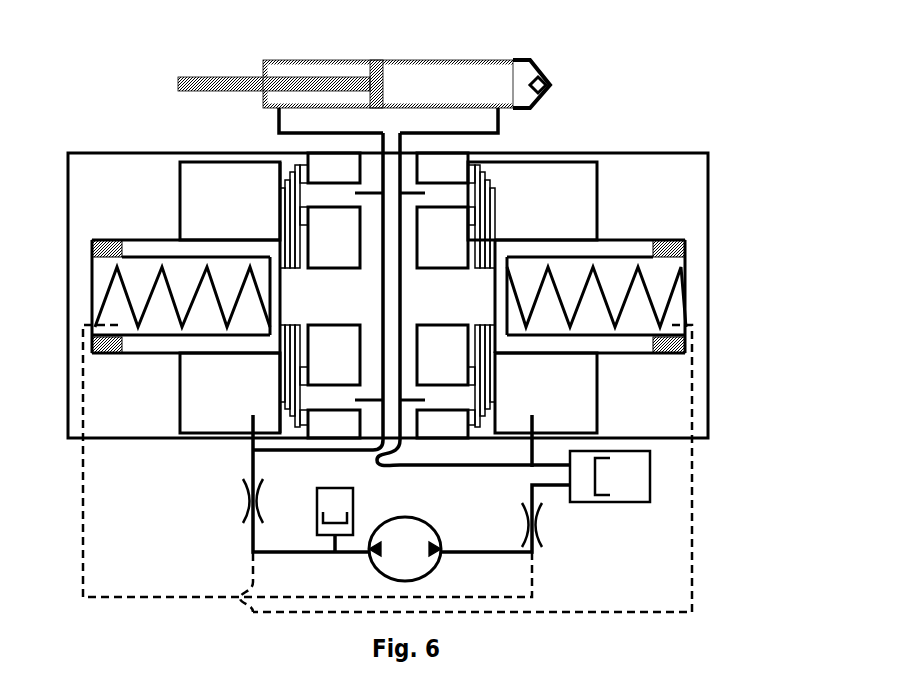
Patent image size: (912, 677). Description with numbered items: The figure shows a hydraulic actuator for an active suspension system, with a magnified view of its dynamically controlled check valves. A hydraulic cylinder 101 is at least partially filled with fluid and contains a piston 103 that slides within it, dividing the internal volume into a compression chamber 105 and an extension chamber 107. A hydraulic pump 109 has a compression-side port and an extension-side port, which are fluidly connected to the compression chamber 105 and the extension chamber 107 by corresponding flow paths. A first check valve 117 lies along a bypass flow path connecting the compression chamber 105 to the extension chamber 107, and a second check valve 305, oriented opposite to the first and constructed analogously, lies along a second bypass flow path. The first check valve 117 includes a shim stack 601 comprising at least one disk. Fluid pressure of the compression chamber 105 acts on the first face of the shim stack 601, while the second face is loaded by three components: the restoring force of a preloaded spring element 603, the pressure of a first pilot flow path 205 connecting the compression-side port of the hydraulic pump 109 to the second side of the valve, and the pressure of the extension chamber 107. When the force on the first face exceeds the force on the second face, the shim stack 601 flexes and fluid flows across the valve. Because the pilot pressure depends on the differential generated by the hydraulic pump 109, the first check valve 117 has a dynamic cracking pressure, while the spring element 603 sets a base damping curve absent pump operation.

The hydraulic cylinder 101 is at (263, 62).
The piston 103 is at (383, 62).
The compression chamber 105 is at (450, 70).
The extension chamber 107 is at (265, 97).
The hydraulic pump 109 is at (433, 568).
The first check valve 117 is at (708, 152).
The first pilot flow path 205 is at (695, 490).
The second check valve 305 is at (68, 153).
The shim stack 601 is at (497, 207).
The spring element 603 is at (677, 307).